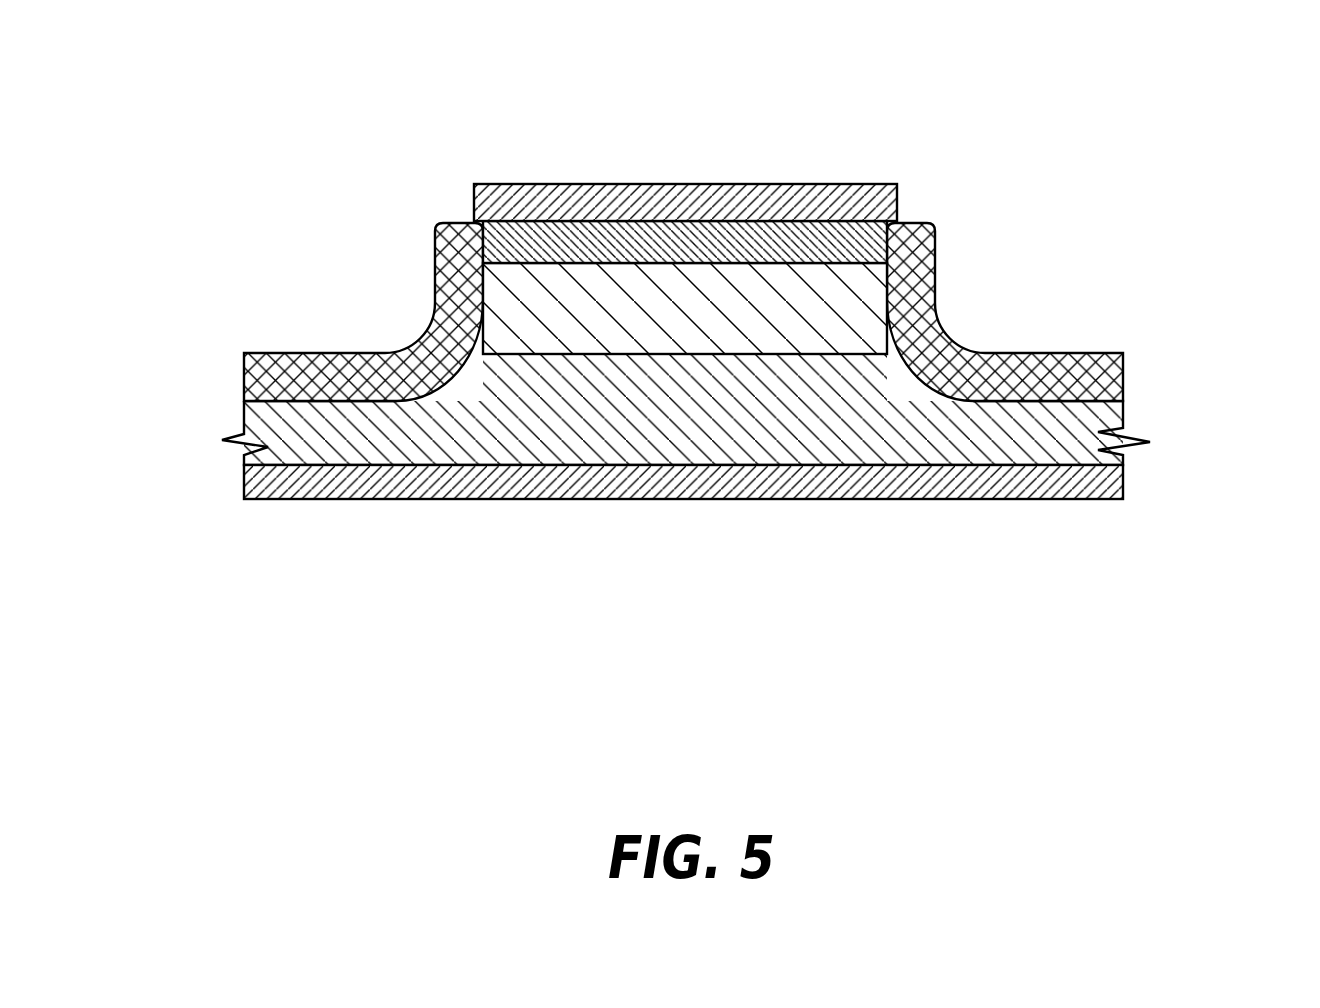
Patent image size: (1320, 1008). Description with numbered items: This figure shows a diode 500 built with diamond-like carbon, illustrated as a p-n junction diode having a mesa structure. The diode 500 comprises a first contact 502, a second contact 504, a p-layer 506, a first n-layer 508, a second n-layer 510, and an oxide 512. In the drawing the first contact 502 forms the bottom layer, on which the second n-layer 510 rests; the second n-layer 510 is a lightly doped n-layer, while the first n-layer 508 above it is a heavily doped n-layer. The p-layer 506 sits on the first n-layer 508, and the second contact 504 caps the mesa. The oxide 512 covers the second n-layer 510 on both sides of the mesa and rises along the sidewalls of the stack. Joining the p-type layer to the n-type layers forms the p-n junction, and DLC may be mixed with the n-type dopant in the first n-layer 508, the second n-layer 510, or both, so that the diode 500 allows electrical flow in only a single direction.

The diode 500 is at (702, 367).
The first contact 502 is at (1093, 498).
The second contact 504 is at (795, 195).
The p-layer 506 is at (860, 248).
The first n-layer 508 is at (867, 325).
The second n-layer 510 is at (1098, 431).
The oxide 512 is at (244, 365).